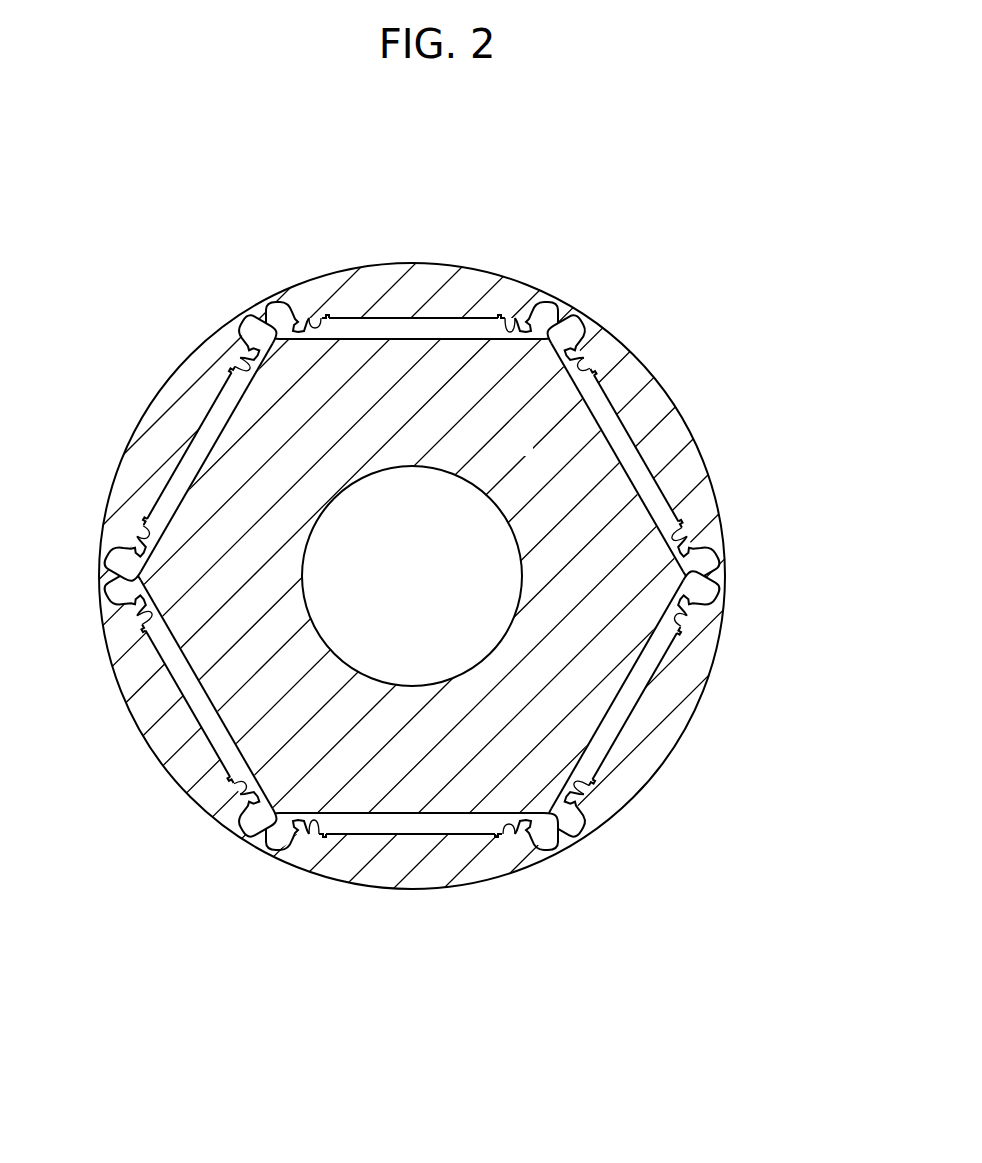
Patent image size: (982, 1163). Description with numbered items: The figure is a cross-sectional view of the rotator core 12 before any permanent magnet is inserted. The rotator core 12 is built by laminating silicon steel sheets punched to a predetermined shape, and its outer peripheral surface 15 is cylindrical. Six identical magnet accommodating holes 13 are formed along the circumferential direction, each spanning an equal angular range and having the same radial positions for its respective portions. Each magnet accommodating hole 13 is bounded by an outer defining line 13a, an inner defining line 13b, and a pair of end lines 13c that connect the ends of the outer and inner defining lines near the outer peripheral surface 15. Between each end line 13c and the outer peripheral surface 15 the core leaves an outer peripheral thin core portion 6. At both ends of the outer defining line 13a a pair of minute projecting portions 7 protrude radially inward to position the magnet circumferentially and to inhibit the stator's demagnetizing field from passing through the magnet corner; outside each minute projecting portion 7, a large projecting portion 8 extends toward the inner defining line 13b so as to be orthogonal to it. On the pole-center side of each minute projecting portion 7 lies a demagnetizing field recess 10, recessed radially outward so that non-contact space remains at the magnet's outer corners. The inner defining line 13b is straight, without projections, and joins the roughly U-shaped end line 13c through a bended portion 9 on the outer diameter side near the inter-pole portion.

The rotator core 12 is at (69, 150).
The outer peripheral surface 15 is at (154, 396).
The magnet accommodating hole 13 is at (422, 330).
The minute projecting portion 7 is at (309, 322).
The large projecting portion 8 is at (283, 318).
The outer peripheral thin core portion 6 is at (565, 322).
The bended portion 9 is at (538, 366).
The demagnetizing field recess 10 is at (682, 626).
The outer defining line 13a is at (657, 486).
The inner defining line 13b is at (582, 352).
The end line 13c is at (592, 332).